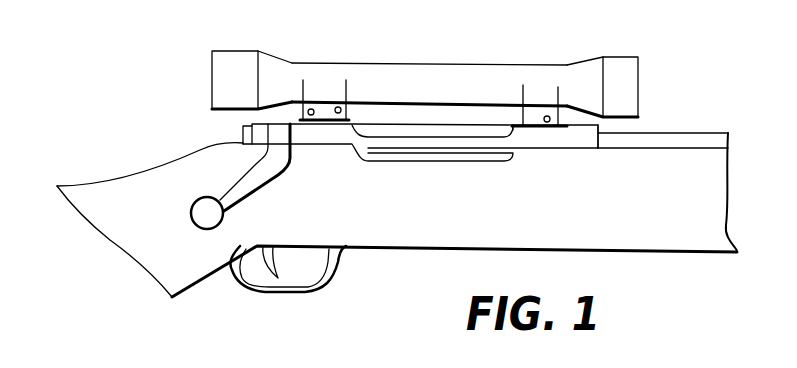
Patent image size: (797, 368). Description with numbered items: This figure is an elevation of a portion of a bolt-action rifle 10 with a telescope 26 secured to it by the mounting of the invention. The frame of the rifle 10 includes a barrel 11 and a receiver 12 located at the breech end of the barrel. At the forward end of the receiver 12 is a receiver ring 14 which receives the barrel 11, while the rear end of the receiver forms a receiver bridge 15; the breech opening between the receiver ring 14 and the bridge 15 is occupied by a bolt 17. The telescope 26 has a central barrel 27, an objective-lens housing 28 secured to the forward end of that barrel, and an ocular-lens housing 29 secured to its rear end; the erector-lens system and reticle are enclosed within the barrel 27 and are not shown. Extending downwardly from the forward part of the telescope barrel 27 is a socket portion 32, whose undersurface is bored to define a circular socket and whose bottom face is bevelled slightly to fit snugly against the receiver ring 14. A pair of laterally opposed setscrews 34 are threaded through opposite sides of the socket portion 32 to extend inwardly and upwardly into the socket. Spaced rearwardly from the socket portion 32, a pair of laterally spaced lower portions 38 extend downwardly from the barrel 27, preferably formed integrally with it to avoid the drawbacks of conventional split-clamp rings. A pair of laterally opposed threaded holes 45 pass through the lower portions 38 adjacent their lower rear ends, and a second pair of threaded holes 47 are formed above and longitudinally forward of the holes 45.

The bolt-action rifle 10 is at (722, 61).
The barrel 11 is at (708, 133).
The receiver 12 is at (426, 148).
The receiver ring 14 is at (537, 136).
The receiver bridge 15 is at (320, 133).
The bolt 17 is at (488, 136).
The telescope 26 is at (441, 59).
The central barrel 27 is at (428, 73).
The objective-lens housing 28 is at (640, 62).
The ocular-lens housing 29 is at (224, 50).
The socket portion 32 is at (595, 134).
The setscrews 34 is at (550, 128).
The lower portions 38 is at (277, 141).
The threaded holes 45 is at (315, 122).
The second threaded holes 47 is at (342, 127).